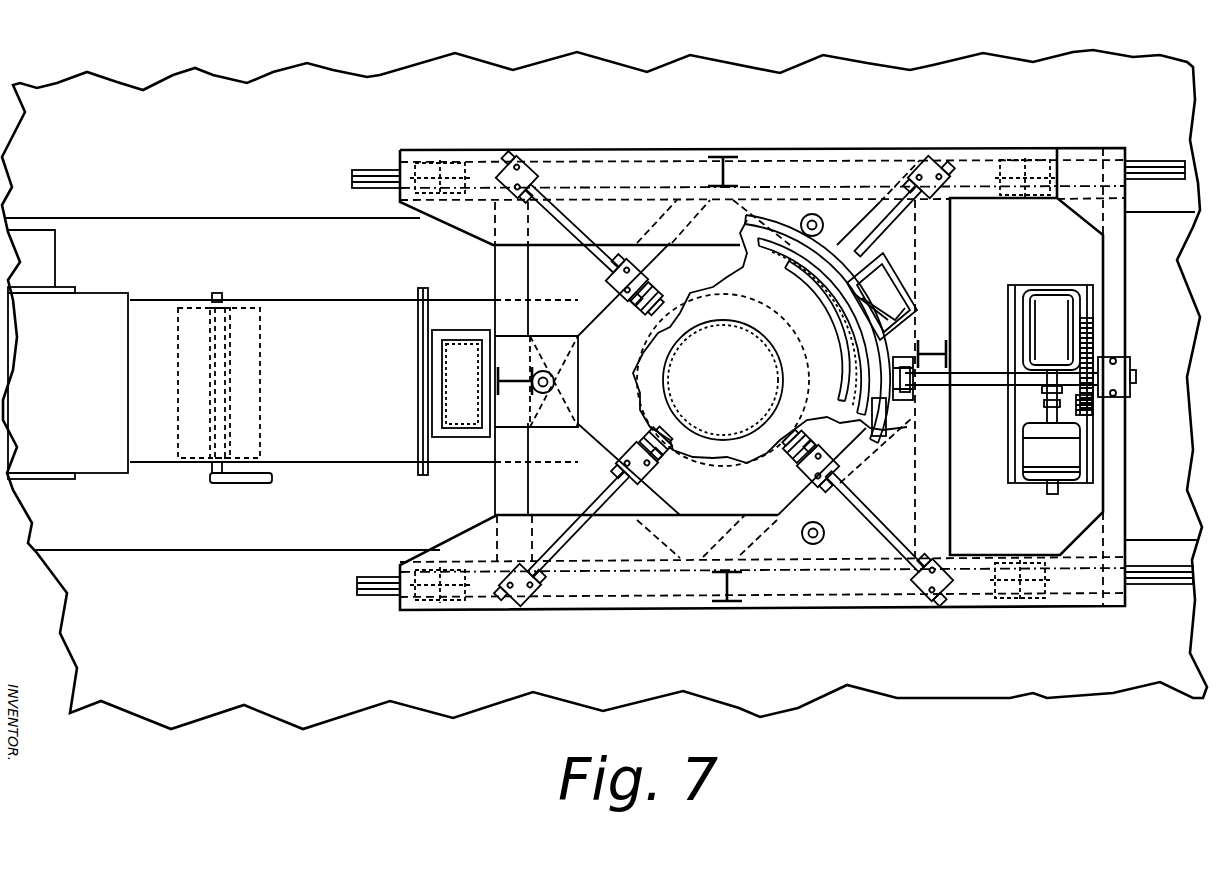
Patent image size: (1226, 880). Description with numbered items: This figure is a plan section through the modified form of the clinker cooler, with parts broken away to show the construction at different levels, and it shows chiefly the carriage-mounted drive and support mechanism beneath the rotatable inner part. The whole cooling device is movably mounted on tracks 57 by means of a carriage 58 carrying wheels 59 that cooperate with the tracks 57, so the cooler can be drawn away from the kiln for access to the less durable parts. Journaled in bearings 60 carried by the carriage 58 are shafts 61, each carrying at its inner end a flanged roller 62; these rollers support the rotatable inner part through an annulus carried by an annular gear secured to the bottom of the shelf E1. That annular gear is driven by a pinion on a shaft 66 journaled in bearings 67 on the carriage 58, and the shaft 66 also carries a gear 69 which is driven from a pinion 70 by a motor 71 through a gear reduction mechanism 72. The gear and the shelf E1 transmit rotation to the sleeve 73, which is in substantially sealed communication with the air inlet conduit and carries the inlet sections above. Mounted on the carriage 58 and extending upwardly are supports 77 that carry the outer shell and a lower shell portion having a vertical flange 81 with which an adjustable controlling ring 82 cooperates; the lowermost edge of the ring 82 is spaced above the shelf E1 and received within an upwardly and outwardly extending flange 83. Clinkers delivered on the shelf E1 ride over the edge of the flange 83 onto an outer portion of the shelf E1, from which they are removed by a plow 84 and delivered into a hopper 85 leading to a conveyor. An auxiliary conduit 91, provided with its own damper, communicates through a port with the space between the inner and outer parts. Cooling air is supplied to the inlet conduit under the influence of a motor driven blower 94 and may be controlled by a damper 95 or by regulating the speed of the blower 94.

The tracks 57 is at (1140, 166).
The carriage 58 is at (680, 612).
The wheels 59 is at (440, 163).
The bearings 60 is at (540, 178).
The shafts 61 is at (585, 241).
The flanged roller 62 is at (656, 291).
The shaft 66 is at (975, 372).
The bearings 67 is at (1120, 374).
The gear 69 is at (1093, 406).
The pinion 70 is at (1091, 335).
The motor 71 is at (1036, 455).
The gear reduction mechanism 72 is at (1045, 306).
The sleeve 73 is at (661, 383).
The supports 77 is at (724, 155).
The vertical flange 81 is at (790, 282).
The adjustable controlling ring 82 is at (847, 350).
The flange 83 is at (871, 402).
The plow 84 is at (890, 276).
The hopper 85 is at (890, 316).
The shelf E1 is at (890, 434).
The auxiliary conduit 91 is at (456, 332).
The motor driven blower 94 is at (95, 305).
The damper 95 is at (262, 401).